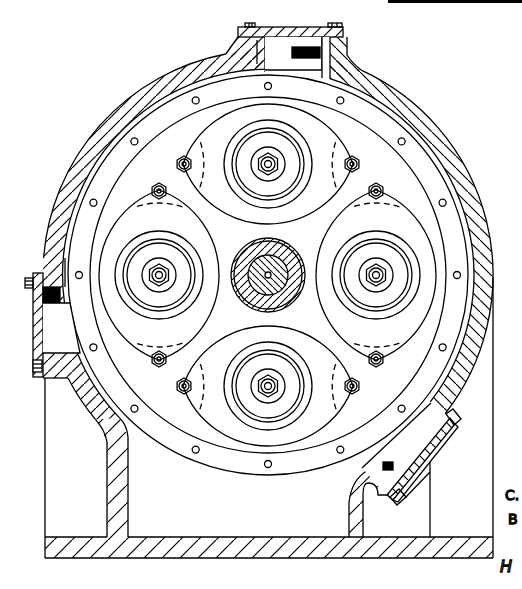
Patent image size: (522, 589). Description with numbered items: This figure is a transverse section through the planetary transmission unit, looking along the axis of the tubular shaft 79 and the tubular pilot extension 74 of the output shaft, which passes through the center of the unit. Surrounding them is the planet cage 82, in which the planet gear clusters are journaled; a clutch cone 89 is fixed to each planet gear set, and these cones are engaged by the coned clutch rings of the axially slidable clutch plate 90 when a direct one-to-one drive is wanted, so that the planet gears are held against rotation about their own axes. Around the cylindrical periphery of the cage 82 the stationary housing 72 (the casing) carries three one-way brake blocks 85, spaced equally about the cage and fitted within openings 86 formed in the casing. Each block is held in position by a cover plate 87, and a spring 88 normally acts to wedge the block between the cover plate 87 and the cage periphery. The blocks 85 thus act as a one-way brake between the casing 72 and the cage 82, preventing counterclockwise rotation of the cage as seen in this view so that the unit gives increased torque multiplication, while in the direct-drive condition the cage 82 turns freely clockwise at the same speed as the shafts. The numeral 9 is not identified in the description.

The housing 9 is at (434, 102).
The housing 72 is at (375, 88).
The tubular pilot extension 74 is at (263, 295).
The tubular shaft 79 is at (285, 255).
The planet cage 82 is at (432, 182).
The one-way brake blocks 85 is at (290, 37).
The openings 86 is at (248, 25).
The cover plates 87 is at (263, 37).
The spring 88 is at (330, 52).
The clutch cones 89 is at (247, 140).
The clutch plate 90 is at (395, 162).